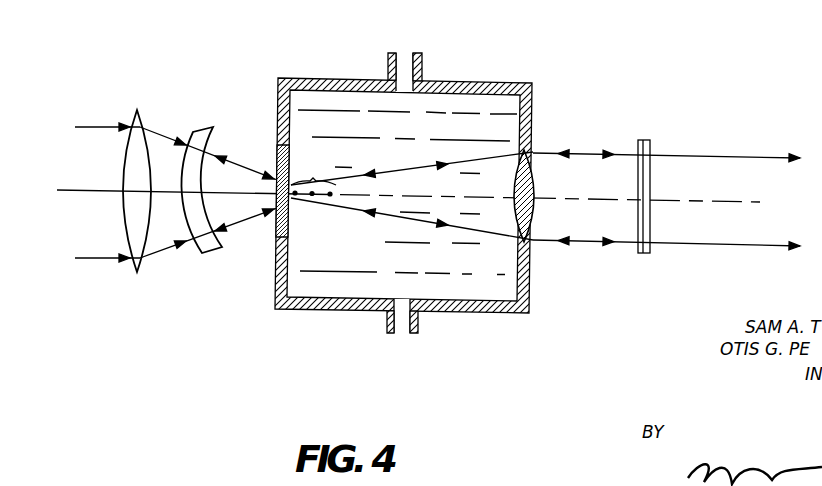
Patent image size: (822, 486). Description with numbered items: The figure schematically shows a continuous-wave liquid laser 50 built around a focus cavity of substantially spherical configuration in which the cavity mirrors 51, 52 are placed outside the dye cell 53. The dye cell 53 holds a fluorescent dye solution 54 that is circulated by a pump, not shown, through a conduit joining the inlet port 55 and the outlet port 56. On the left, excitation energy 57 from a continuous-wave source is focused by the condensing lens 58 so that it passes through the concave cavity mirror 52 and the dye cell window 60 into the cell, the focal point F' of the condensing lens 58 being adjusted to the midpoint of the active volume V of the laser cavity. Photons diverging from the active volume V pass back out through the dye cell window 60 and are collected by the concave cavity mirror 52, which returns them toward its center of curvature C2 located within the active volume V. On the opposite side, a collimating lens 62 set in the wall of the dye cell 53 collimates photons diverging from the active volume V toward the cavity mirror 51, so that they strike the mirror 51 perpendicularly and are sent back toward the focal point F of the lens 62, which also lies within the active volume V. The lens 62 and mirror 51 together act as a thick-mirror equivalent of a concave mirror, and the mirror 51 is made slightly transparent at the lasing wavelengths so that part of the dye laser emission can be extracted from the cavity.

The continuous-wave liquid laser 50 is at (420, 170).
The cavity mirror 51 is at (645, 140).
The concave cavity mirror 52 is at (203, 129).
The dye cell 53 is at (527, 84).
The fluorescent dye solution 54 is at (480, 288).
The inlet port 55 is at (400, 57).
The outlet port 56 is at (405, 331).
The excitation energy 57 is at (108, 127).
The condensing lens 58 is at (135, 270).
The dye cell window 60 is at (278, 234).
The collimating lens 62 is at (535, 152).
The active volume V is at (313, 169).
The focal point of lens 62 F is at (292, 219).
The focal point of condensing lens 58 F' is at (318, 224).
The center of curvature of mirror 52 C2 is at (330, 196).